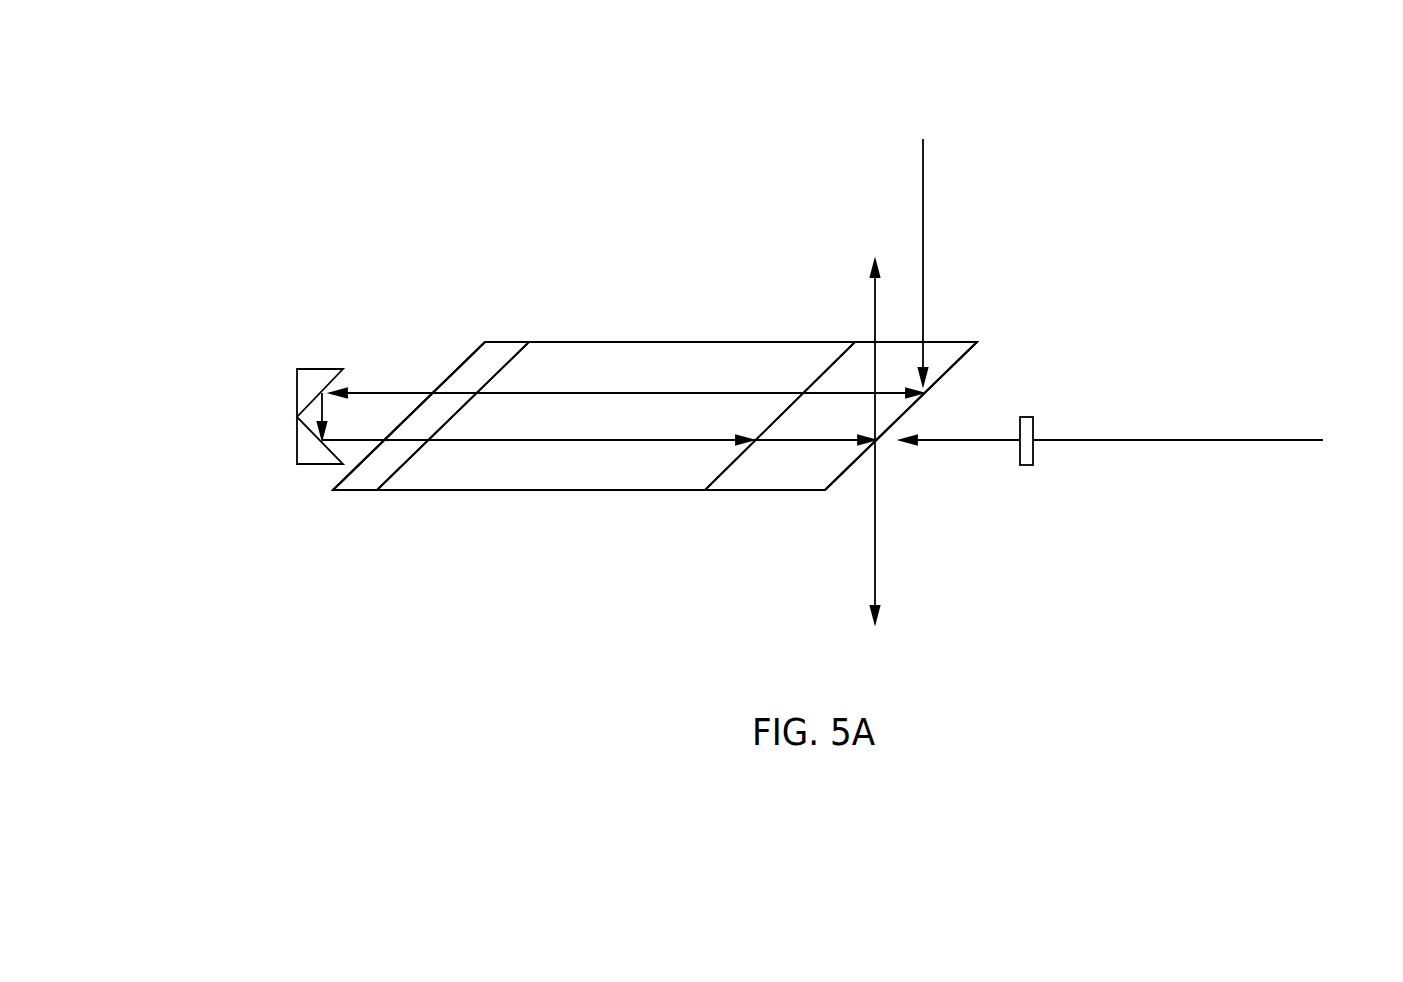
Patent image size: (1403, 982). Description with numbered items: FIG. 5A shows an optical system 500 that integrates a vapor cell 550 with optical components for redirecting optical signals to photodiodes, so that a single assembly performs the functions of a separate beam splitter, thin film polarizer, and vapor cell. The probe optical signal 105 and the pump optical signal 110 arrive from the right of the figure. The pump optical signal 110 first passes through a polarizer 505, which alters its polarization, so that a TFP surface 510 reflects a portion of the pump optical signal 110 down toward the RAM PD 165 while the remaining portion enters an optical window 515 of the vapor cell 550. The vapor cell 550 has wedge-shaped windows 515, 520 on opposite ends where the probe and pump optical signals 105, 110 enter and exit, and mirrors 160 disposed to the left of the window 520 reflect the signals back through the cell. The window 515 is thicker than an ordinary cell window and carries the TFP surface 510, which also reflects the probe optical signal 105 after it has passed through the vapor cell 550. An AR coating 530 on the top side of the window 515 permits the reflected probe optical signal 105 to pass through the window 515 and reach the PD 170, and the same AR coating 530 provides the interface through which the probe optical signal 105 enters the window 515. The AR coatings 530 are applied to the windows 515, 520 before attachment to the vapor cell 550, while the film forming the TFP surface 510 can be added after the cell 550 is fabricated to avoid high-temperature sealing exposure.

The probe optical signal 105 is at (924, 152).
The pump optical signal 110 is at (1220, 441).
The mirrors 160 is at (297, 437).
The RAM PD 165 is at (875, 560).
The PD 170 is at (868, 321).
The optical system 500 is at (1130, 263).
The polarizer 505 is at (1028, 469).
The TFP surface 510 is at (952, 372).
The window 515 is at (777, 483).
The window 520 is at (363, 481).
The AR coating 530 is at (893, 342).
The vapor cell 550 is at (553, 483).